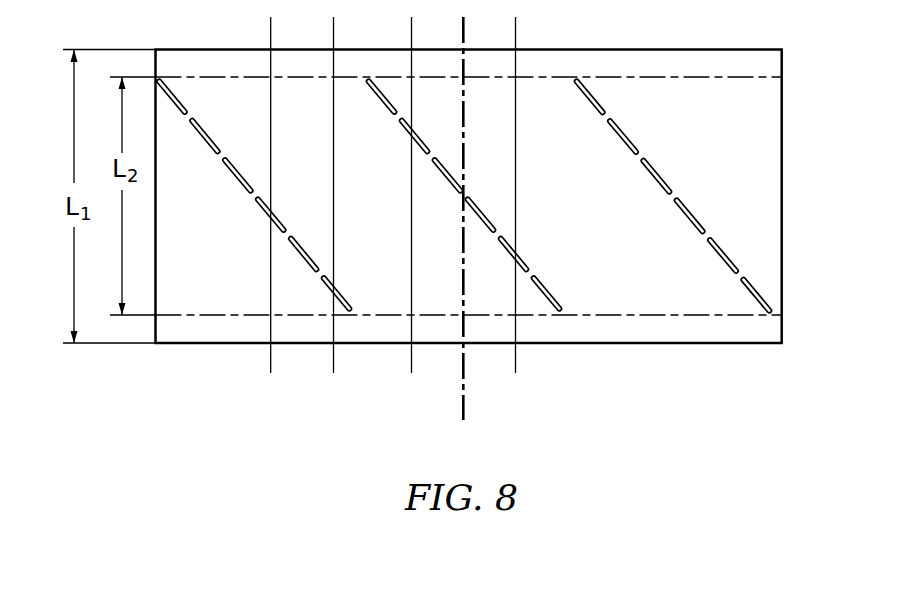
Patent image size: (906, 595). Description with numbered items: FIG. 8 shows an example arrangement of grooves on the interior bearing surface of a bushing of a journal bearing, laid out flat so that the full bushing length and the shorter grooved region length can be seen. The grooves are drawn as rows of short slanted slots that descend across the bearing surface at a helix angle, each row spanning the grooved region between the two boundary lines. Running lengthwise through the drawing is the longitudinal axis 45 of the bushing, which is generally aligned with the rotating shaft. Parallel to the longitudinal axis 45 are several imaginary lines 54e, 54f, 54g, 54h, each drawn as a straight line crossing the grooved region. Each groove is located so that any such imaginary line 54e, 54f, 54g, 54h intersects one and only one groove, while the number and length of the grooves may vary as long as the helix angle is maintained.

The imaginary line 54e is at (271, 363).
The imaginary line 54f is at (334, 363).
The imaginary line 54g is at (412, 363).
The imaginary line 54h is at (516, 362).
The longitudinal axis 45 is at (463, 405).